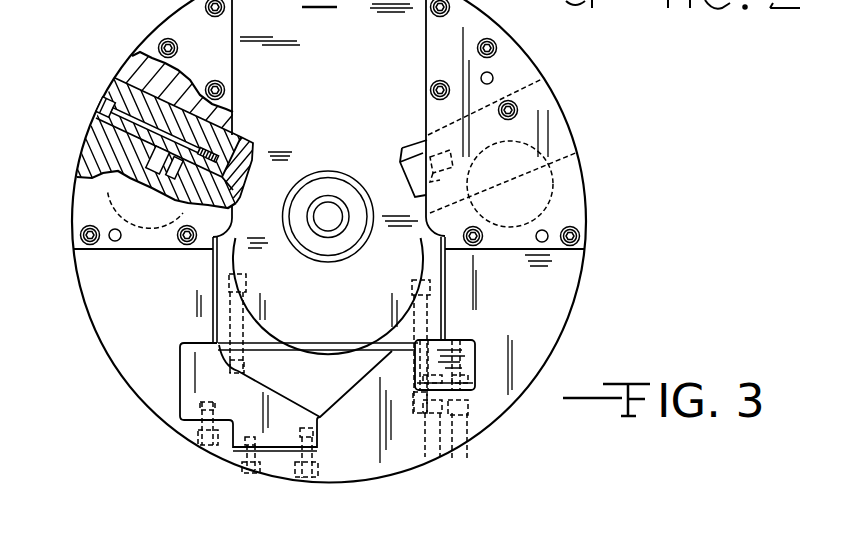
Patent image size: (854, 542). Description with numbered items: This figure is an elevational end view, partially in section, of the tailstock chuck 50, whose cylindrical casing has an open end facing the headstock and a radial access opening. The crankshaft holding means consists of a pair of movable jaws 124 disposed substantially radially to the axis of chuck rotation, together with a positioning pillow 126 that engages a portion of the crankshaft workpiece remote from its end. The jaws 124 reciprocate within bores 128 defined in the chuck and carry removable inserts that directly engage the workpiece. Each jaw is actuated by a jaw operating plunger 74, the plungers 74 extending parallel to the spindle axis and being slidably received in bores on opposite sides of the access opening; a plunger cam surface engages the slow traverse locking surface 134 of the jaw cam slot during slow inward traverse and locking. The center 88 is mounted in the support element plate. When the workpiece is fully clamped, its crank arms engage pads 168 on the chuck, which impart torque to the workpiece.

The chuck 50 is at (575, 310).
The jaw operating plunger 74 is at (104, 171).
The center 88 is at (325, 212).
The movable jaw 124 is at (240, 140).
The positioning pillow 126 is at (299, 307).
The bore 128 is at (120, 57).
The slow traverse locking surface 134 is at (174, 205).
The pad 168 is at (475, 341).